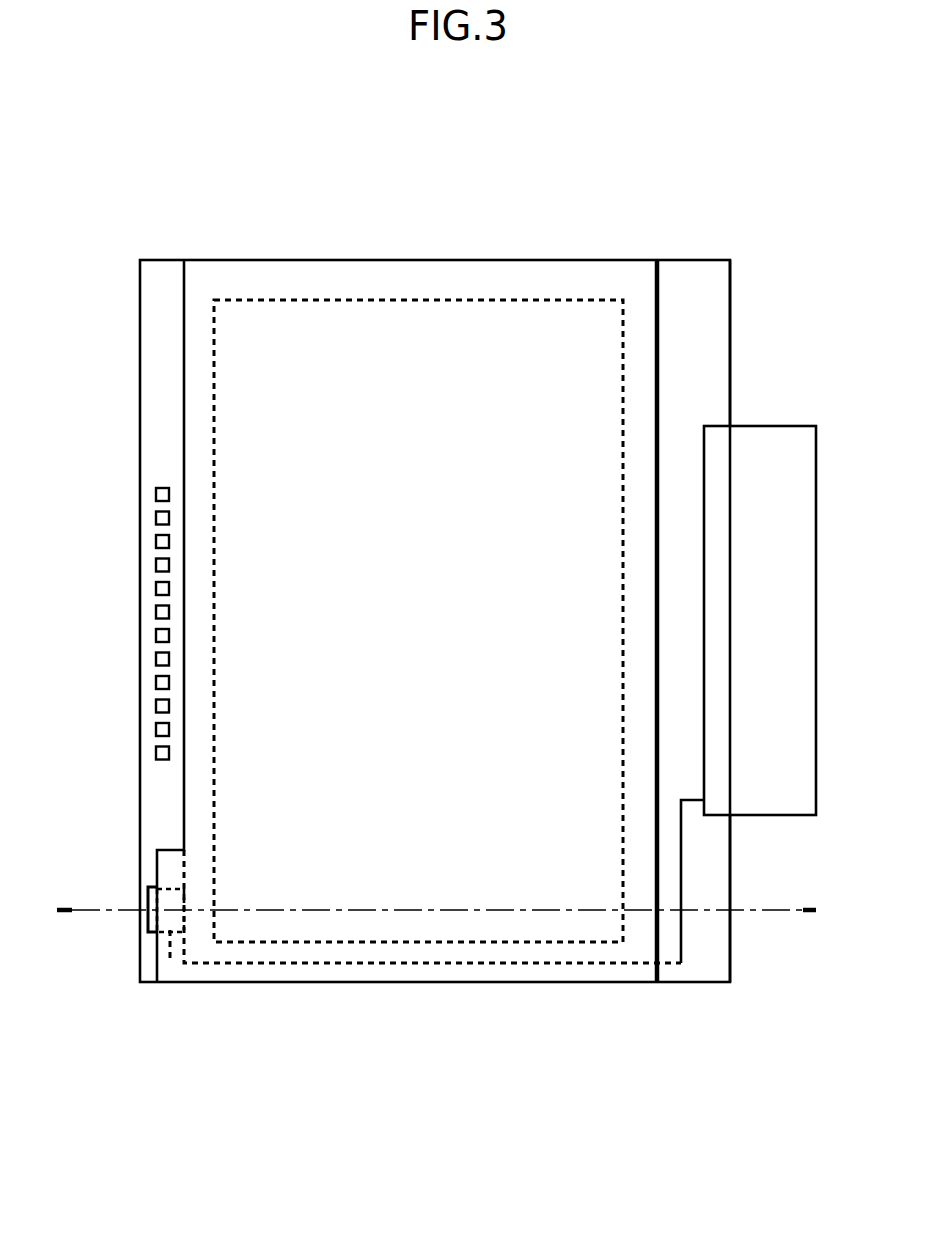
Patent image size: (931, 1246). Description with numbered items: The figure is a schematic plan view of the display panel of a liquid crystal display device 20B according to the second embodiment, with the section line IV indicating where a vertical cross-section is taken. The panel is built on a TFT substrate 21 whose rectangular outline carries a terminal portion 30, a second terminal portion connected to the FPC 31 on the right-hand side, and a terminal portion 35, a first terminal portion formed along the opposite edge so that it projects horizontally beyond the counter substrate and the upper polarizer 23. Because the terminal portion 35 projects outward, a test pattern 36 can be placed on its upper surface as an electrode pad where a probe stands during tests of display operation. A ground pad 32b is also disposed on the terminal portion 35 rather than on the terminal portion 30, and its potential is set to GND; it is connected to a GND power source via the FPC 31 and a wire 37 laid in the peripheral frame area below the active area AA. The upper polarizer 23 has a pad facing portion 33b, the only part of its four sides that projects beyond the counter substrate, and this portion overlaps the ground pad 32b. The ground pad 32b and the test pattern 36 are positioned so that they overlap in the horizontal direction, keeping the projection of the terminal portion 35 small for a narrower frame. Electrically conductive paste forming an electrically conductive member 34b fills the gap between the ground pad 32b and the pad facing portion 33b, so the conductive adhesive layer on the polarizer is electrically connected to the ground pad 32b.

The liquid crystal display device 20B is at (232, 205).
The TFT substrate 21 is at (732, 290).
The upper polarizer 23 is at (659, 288).
The terminal portion 30 is at (734, 1002).
The FPC 31 is at (765, 426).
The ground pad 32b is at (150, 896).
The pad facing portion 33b is at (184, 993).
The electrically conductive member 34b is at (170, 884).
The terminal portion 35 is at (183, 1045).
The test pattern 36 is at (156, 494).
The wire 37 is at (382, 966).
The active area AA is at (506, 300).
The line IV- IV is at (63, 913).